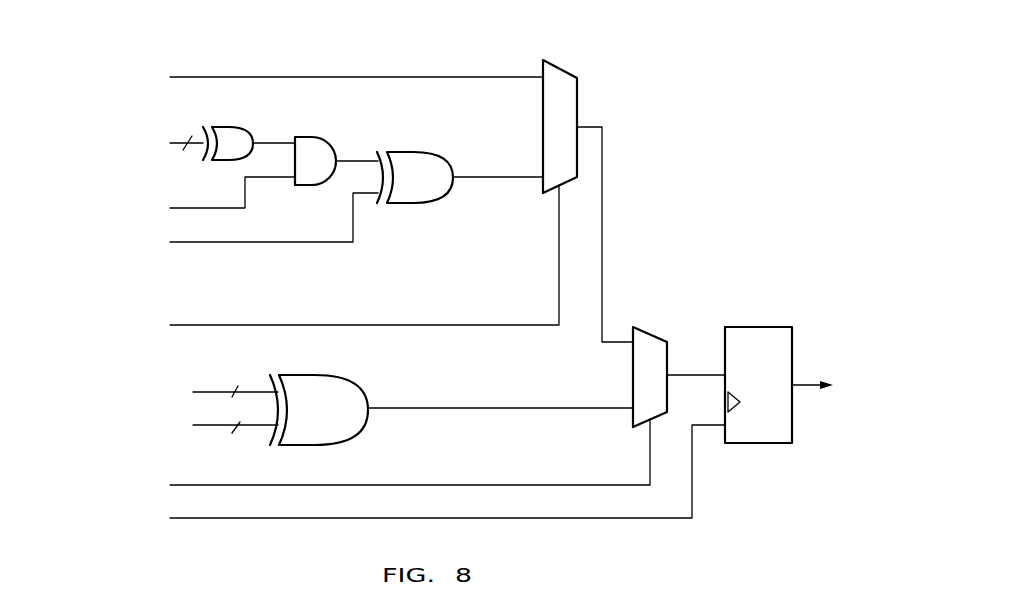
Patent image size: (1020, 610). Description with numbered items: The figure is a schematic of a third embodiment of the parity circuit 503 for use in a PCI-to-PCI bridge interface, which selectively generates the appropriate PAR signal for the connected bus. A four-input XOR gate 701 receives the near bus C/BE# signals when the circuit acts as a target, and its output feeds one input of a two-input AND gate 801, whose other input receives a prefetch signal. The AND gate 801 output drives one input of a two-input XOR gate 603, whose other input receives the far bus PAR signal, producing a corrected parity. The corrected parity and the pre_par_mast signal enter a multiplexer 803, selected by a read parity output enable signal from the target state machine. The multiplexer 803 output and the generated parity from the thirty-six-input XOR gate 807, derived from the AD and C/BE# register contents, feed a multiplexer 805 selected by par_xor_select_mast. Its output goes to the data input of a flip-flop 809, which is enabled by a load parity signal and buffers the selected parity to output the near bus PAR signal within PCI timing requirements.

The parity circuit 503 is at (705, 54).
The XOR gate 701 is at (239, 127).
The AND gate 801 is at (319, 136).
The XOR gate 603 is at (412, 151).
The multiplexer 803 is at (562, 68).
The XOR gate 807 is at (331, 374).
The multiplexer 805 is at (656, 327).
The flip-flop 809 is at (771, 327).